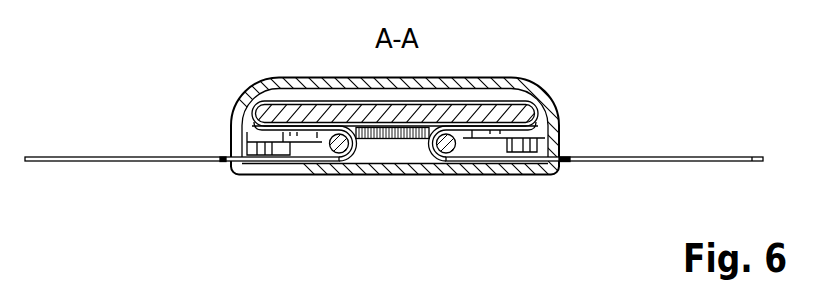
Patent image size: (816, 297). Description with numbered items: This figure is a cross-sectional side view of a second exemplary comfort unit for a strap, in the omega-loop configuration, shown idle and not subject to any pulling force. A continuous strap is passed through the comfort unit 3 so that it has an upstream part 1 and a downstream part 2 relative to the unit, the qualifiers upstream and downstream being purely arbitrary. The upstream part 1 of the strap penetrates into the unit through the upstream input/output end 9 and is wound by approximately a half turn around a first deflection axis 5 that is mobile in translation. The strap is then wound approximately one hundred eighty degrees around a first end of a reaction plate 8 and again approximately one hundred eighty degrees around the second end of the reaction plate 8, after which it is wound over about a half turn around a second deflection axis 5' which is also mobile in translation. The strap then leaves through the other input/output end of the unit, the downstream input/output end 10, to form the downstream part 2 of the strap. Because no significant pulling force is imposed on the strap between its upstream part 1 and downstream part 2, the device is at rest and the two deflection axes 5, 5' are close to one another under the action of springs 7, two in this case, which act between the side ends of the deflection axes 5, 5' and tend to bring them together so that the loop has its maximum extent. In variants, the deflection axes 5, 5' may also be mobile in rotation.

The upstream part of the strap 1 is at (103, 155).
The downstream part of the strap 2 is at (688, 157).
The comfort unit 3 is at (272, 174).
The first deflection axis 5 is at (341, 179).
The second deflection axis 5' is at (452, 179).
The springs 7 is at (398, 140).
The reaction plate 8 is at (322, 110).
The upstream input/output end 9 is at (218, 172).
The downstream input/output end 10 is at (582, 132).